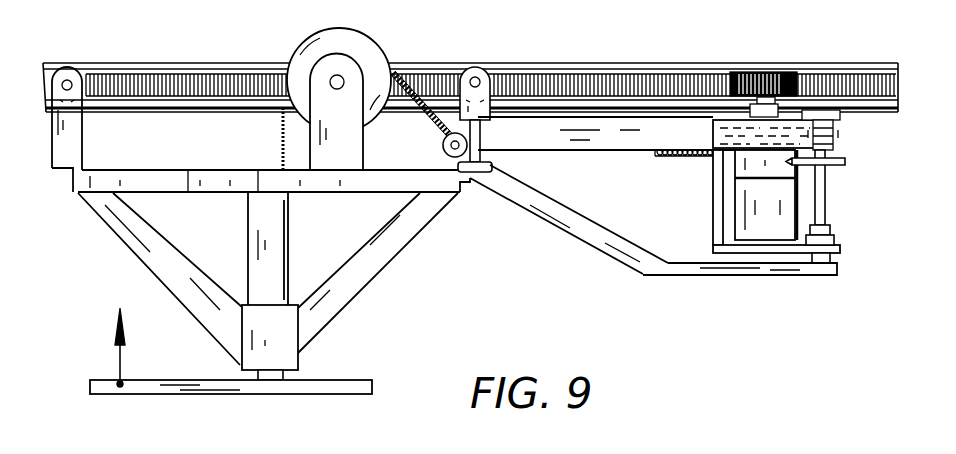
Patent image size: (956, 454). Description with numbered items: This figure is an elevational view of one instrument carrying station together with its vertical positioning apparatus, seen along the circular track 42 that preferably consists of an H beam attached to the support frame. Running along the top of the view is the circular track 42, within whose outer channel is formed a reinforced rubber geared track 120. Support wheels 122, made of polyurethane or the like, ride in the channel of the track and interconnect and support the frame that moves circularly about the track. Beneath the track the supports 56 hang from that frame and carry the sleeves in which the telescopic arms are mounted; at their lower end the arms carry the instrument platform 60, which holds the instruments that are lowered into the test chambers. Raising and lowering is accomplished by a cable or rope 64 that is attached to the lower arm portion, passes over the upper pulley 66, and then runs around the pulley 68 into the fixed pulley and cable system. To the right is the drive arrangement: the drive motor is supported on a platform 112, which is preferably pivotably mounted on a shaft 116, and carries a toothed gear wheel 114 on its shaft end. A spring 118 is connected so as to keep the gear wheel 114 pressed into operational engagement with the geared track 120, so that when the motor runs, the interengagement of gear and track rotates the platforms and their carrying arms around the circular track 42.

The circular track 42 is at (592, 62).
The reinforced rubber geared track 120 is at (648, 68).
The toothed gear wheel 114 is at (763, 72).
The upper pulley 66 is at (376, 47).
The pulley 68 is at (442, 130).
The support wheels 122 is at (483, 63).
The cable or rope 64 is at (282, 139).
The supports 56 is at (408, 240).
The instrument platform 60 is at (313, 396).
The spring 118 is at (670, 160).
The shaft 116 is at (823, 181).
The platform 112 is at (800, 252).